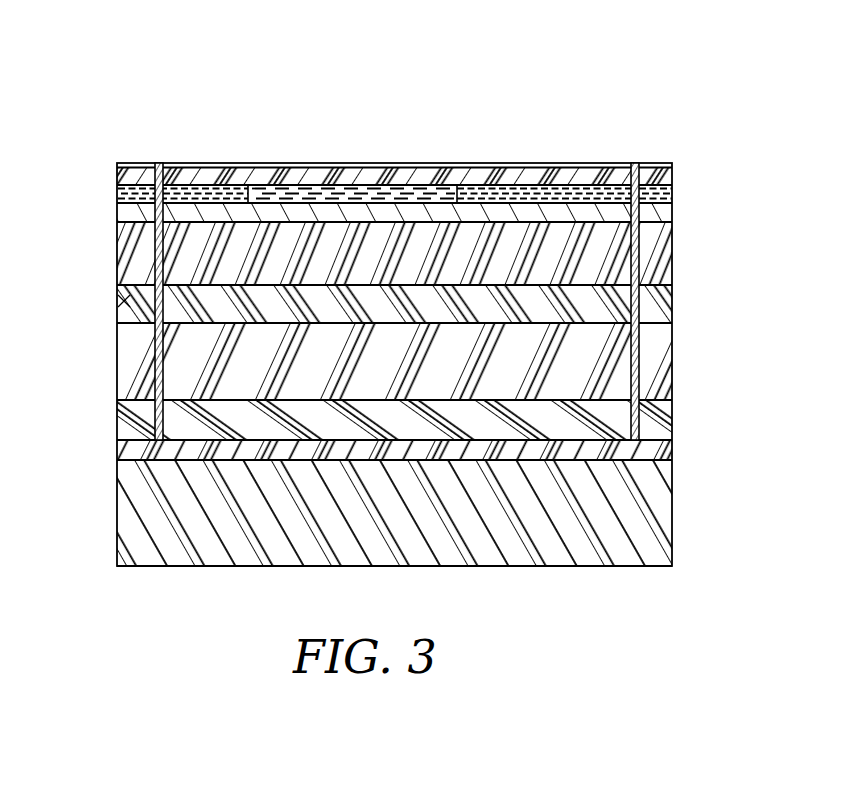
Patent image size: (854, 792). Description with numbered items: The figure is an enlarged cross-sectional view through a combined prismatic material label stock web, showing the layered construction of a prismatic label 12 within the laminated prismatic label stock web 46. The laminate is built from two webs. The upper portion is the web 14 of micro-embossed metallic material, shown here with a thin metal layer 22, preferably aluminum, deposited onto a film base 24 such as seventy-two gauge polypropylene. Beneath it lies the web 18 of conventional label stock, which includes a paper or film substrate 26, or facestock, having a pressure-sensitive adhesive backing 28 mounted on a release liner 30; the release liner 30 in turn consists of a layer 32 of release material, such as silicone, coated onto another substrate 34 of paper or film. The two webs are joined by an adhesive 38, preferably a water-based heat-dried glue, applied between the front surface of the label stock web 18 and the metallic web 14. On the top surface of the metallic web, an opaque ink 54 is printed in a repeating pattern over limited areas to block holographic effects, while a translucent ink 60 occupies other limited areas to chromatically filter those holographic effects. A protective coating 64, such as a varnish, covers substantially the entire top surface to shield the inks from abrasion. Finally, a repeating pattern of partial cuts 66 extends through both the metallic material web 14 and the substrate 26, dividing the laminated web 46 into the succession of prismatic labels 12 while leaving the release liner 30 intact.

The prismatic label 12 is at (502, 158).
The web of micro-embossed metallic material 14 is at (414, 239).
The web of conventional label stock 18 is at (397, 445).
The thin metal layer 22 is at (672, 215).
The film base 24 is at (660, 268).
The substrate (facestock) 26 is at (657, 337).
The pressure-sensitive adhesive backing 28 is at (672, 407).
The release liner 30 is at (687, 443).
The layer of release material 32 is at (660, 433).
The substrate of release liner 34 is at (557, 548).
The adhesive 38 is at (117, 307).
The laminated prismatic label stock web 46 is at (316, 135).
The opaque ink 54 is at (117, 198).
The translucent ink 60 is at (258, 190).
The protective coating 64 is at (403, 177).
The repeating pattern of partial cuts 66 is at (158, 165).